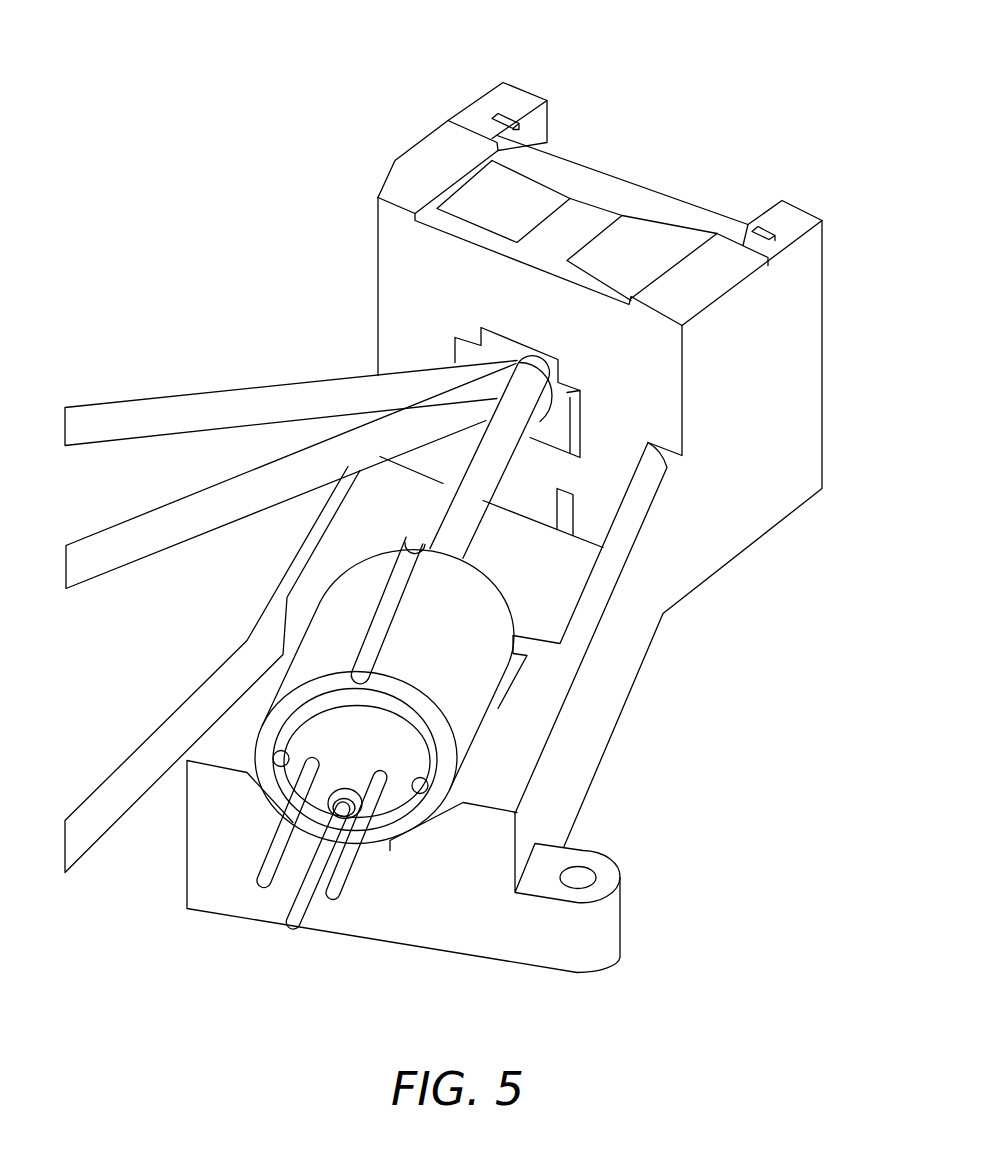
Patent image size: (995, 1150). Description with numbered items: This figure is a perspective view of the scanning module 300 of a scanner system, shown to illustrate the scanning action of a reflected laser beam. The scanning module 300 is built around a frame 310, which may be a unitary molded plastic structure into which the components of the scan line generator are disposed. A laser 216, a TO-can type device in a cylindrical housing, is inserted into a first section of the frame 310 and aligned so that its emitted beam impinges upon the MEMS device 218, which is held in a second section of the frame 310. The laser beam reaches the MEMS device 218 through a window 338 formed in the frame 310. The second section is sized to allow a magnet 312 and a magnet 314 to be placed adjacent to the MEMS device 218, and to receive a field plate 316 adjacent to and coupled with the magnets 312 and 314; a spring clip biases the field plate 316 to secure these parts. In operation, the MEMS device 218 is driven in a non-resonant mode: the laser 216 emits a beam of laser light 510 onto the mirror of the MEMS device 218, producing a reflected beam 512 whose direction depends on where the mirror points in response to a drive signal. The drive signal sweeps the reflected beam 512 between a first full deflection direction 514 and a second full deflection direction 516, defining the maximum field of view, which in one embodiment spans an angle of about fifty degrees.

The scanning module 300 is at (726, 53).
The frame 310 is at (816, 265).
The magnet 312 is at (529, 186).
The magnet 314 is at (650, 244).
The field plate 316 is at (616, 184).
The MEMS device 218 is at (490, 338).
The window 338 is at (566, 392).
The beam of laser light 510 is at (468, 547).
The reflected beam 512 is at (89, 551).
The first full deflection direction 514 is at (89, 411).
The second full deflection direction 516 is at (84, 815).
The laser 216 is at (478, 695).